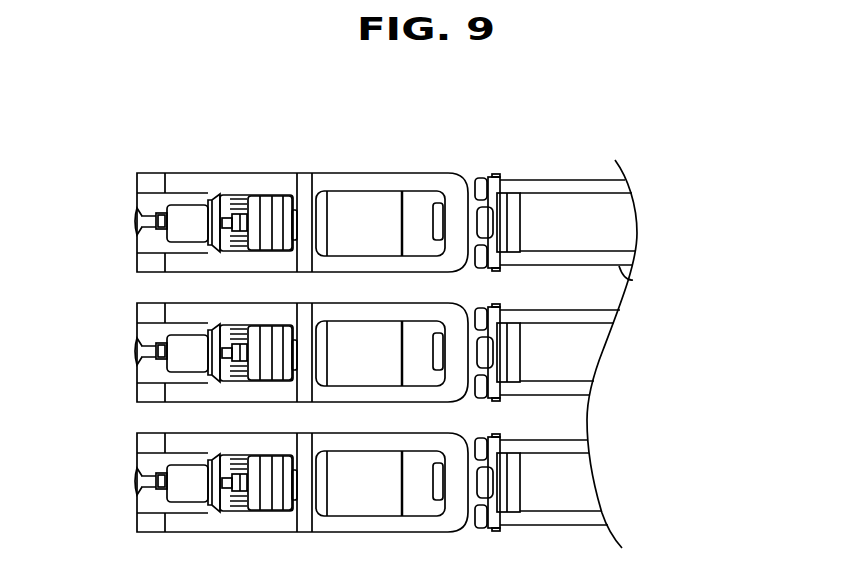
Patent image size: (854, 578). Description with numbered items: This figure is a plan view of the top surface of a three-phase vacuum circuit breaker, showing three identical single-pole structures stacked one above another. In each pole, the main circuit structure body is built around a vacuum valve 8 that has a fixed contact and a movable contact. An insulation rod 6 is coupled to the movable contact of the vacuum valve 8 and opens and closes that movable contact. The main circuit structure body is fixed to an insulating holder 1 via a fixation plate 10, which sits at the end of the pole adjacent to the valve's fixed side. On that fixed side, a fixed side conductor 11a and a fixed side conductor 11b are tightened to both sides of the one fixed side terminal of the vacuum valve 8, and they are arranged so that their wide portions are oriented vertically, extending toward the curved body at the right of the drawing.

The insulating holder 1 is at (275, 178).
The insulation rod 6 is at (186, 218).
The vacuum valve 8 is at (348, 217).
The fixation plate 10 is at (513, 221).
The fixed side conductor 11a is at (590, 186).
The fixed side conductor 11b is at (633, 280).